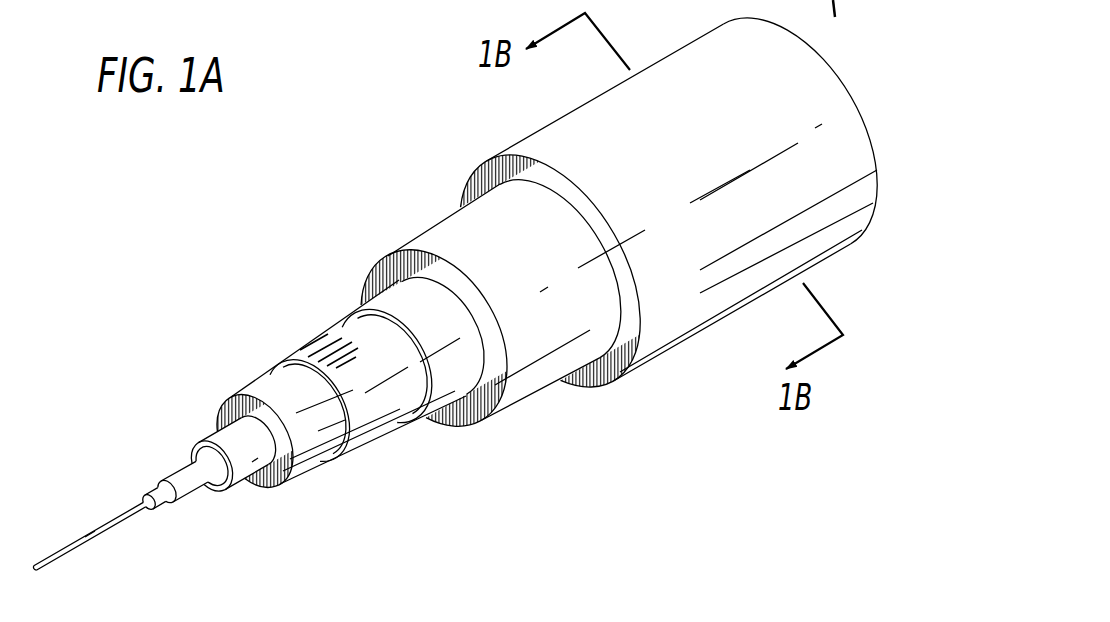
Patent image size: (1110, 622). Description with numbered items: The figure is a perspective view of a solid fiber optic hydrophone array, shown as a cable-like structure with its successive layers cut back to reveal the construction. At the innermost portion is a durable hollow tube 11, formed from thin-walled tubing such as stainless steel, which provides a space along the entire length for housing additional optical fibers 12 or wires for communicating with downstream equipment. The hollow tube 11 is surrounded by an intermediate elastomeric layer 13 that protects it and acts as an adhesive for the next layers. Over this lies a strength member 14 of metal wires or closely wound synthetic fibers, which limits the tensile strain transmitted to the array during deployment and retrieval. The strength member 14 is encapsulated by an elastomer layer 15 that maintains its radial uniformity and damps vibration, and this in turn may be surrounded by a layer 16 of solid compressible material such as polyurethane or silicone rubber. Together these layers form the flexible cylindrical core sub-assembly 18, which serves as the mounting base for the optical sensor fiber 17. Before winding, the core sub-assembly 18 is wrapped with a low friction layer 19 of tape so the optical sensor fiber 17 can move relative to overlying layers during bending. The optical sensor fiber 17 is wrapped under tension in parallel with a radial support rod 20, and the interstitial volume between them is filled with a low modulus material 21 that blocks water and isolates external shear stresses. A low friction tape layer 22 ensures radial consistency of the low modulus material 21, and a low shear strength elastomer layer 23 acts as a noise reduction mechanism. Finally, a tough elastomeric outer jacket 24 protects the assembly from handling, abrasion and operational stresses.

The hollow tube 11 is at (163, 500).
The additional optical fibers 12 is at (43, 571).
The intermediate elastomeric layer 13 is at (187, 487).
The strength member 14 is at (206, 455).
The elastomer layer 15 is at (255, 463).
The layer of solid compressible material 16 is at (310, 447).
The optical sensor fiber 17 is at (303, 340).
The core sub-assembly 18 is at (244, 385).
The low friction layer 19 is at (358, 432).
The radial support rod 20 is at (342, 364).
The low modulus material 21 is at (402, 410).
The low friction tape layer 22 is at (450, 388).
The low shear strength elastomer layer 23 is at (528, 378).
The outer jacket 24 is at (673, 313).